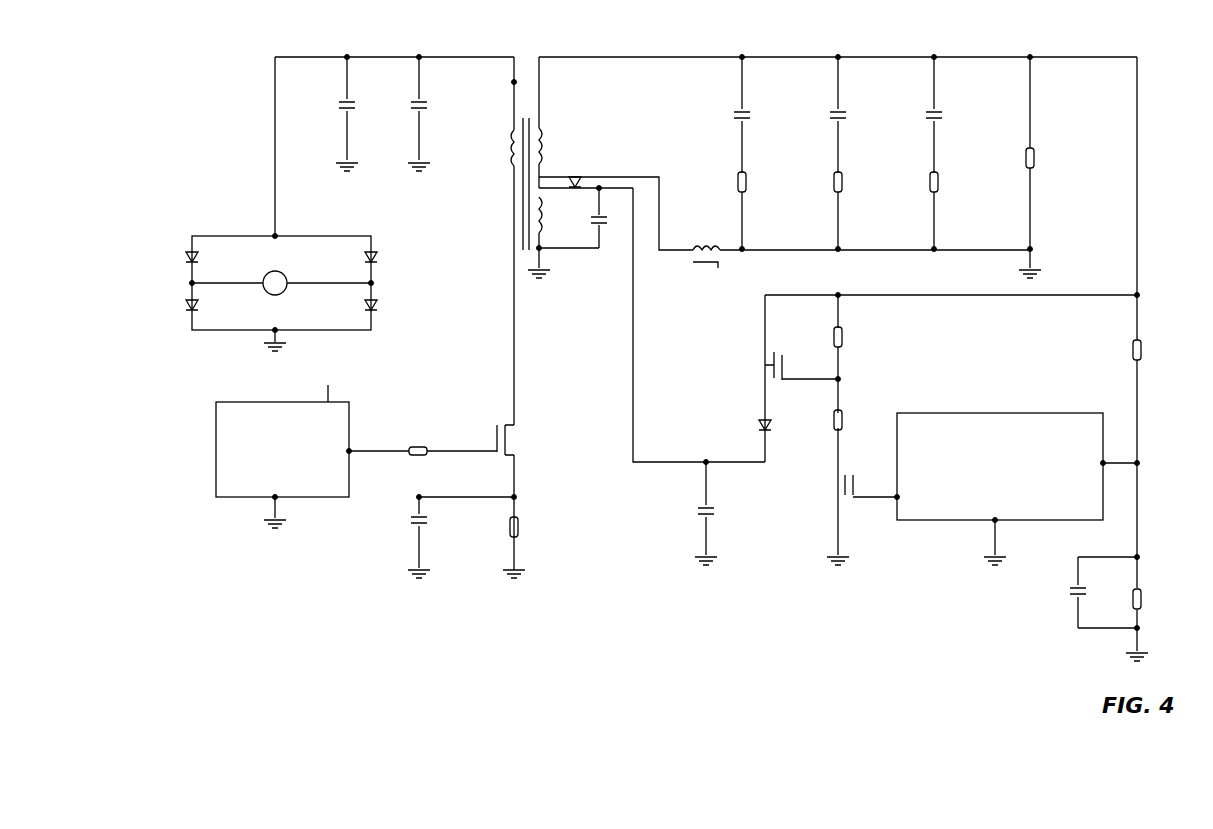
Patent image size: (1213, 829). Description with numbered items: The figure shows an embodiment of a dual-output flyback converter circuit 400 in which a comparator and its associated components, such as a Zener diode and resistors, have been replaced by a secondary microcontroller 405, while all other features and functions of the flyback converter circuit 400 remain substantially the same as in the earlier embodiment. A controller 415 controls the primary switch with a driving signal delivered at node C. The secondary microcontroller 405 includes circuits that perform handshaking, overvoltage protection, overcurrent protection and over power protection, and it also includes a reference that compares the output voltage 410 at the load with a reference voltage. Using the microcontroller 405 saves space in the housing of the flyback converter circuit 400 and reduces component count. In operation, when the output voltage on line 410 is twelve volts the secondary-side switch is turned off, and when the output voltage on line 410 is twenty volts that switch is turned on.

The flyback converter circuit 400 is at (258, 36).
The secondary microcontroller 405 is at (921, 526).
The output voltage 410 is at (1135, 74).
The controller 415 is at (243, 501).